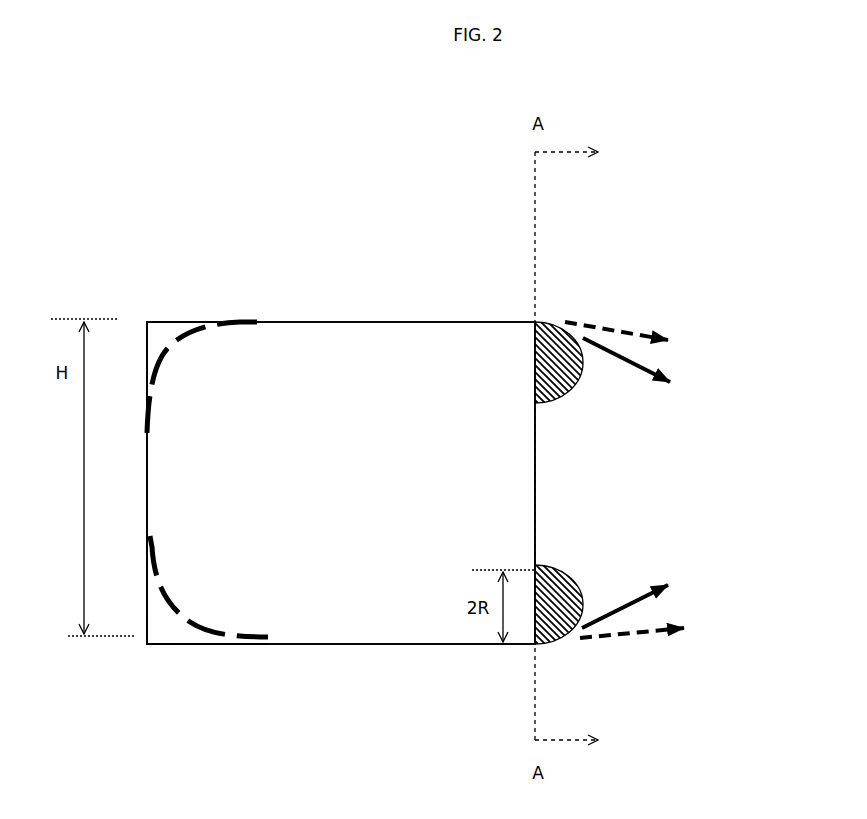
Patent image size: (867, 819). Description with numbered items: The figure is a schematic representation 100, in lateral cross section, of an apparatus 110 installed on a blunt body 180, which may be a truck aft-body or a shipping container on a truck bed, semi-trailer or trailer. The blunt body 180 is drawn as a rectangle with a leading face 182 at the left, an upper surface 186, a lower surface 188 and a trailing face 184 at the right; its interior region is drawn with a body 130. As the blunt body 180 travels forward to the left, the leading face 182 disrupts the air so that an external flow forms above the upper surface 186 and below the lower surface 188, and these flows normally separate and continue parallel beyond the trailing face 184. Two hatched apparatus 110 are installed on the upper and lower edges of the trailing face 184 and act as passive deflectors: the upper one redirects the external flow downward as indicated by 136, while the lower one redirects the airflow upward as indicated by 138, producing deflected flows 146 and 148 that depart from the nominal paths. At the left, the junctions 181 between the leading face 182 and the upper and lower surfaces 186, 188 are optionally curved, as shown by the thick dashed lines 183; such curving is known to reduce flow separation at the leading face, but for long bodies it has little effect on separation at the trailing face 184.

The schematic representation 100 is at (97, 132).
The apparatus 110 is at (555, 378).
The substrate body 130 is at (425, 583).
The downward redirection of external flow 136 is at (642, 320).
The upward redirection of external flow 138 is at (632, 638).
The deflected external flow 146 is at (662, 373).
The ink droplet trajectory (lower) 148 is at (640, 592).
The blunt body 180 is at (245, 393).
The junctions 181 is at (147, 322).
The leading face 182 is at (146, 355).
The dashed lines 183 is at (172, 328).
The trailing face 184 is at (535, 443).
The upper surface 186 is at (277, 325).
The lower surface 188 is at (287, 644).